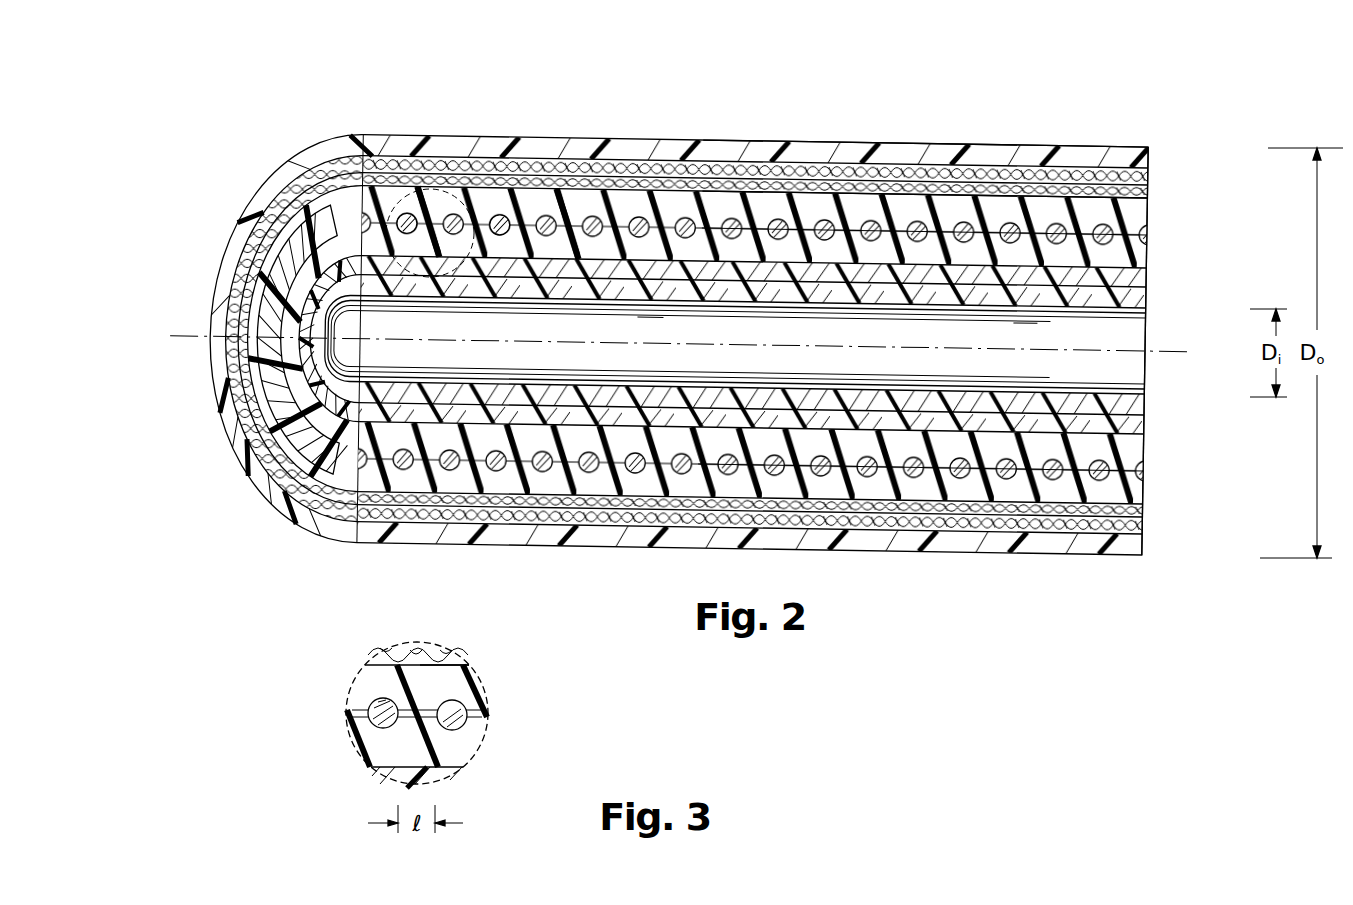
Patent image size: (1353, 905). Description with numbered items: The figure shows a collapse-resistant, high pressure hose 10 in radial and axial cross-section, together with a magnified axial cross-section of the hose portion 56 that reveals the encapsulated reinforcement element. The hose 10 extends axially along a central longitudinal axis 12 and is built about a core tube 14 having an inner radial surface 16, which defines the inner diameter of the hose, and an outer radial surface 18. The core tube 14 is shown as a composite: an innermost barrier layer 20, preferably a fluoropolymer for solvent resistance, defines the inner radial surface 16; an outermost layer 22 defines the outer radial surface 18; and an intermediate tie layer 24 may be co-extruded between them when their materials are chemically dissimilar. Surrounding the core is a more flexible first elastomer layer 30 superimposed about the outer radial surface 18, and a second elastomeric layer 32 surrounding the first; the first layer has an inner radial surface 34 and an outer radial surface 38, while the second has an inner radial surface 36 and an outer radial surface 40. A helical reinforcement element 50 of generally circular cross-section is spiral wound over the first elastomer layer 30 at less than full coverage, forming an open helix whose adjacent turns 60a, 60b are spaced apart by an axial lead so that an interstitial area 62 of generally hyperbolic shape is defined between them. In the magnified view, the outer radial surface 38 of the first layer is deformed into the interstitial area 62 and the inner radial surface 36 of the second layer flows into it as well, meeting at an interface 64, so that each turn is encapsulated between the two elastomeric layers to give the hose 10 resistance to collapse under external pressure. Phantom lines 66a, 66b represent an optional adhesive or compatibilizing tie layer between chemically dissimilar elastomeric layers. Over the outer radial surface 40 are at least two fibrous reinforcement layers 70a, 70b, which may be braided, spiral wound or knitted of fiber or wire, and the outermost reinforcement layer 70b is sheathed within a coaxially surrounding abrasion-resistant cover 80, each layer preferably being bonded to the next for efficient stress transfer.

In FIG. 2, the hose 10 is at (1283, 124).
In FIG. 2, the central longitudinal axis 12 is at (195, 355).
In FIG. 2, the core tube 14 is at (1165, 437).
In FIG. 2, the inner radial surface 16 is at (918, 309).
In FIG. 2, the outer radial surface 18 is at (1148, 238).
In FIG. 3, the outer radial surface 18 is at (382, 782).
In FIG. 2, the barrier layer 20 is at (1150, 306).
In FIG. 2, the outermost layer 22 is at (1148, 276).
In FIG. 3, the outermost layer 22 is at (440, 792).
In FIG. 2, the intermediate tie layer 24 is at (1143, 417).
In FIG. 2, the first elastomer layer 30 is at (1150, 258).
In FIG. 3, the first elastomer layer 30 is at (478, 753).
In FIG. 2, the second elastomeric layer 32 is at (1148, 212).
In FIG. 3, the second elastomeric layer 32 is at (482, 665).
In FIG. 2, the inner radial surface of first elastomeric layer 34 is at (1150, 430).
In FIG. 3, the inner radial surface of first elastomeric layer 34 is at (450, 775).
In FIG. 2, the inner radial surface of second elastomeric layer 36 is at (1150, 465).
In FIG. 3, the inner radial surface of second elastomeric layer 36 is at (480, 745).
In FIG. 2, the outer radial surface of first elastomeric layer 38 is at (1110, 500).
In FIG. 3, the outer radial surface of first elastomeric layer 38 is at (482, 692).
In FIG. 2, the outer radial surface of second elastomeric layer 40 is at (1108, 545).
In FIG. 3, the outer radial surface of second elastomeric layer 40 is at (448, 655).
In FIG. 2, the helical reinforcement element 50 is at (305, 516).
In FIG. 2, the magnified hose portion 56 is at (282, 176).
In FIG. 2, the turn of helical element 60a is at (405, 213).
In FIG. 3, the turn of helical element 60a is at (372, 700).
In FIG. 2, the turn of helical element 60b is at (502, 212).
In FIG. 3, the turn of helical element 60b is at (480, 705).
In FIG. 2, the interstitial area 62 is at (428, 205).
In FIG. 3, the interstitial area 62 is at (395, 685).
In FIG. 2, the interface 64 is at (568, 212).
In FIG. 3, the interface 64 is at (352, 708).
In FIG. 3, the intermediate tie layer line 66a is at (362, 692).
In FIG. 3, the intermediate tie layer line 66b is at (365, 735).
In FIG. 2, the fibrous reinforcement layer 70a is at (1148, 190).
In FIG. 3, the fibrous reinforcement layer 70a is at (420, 645).
In FIG. 2, the outermost fibrous reinforcement layer 70b is at (1150, 172).
In FIG. 2, the cover 80 is at (1148, 147).